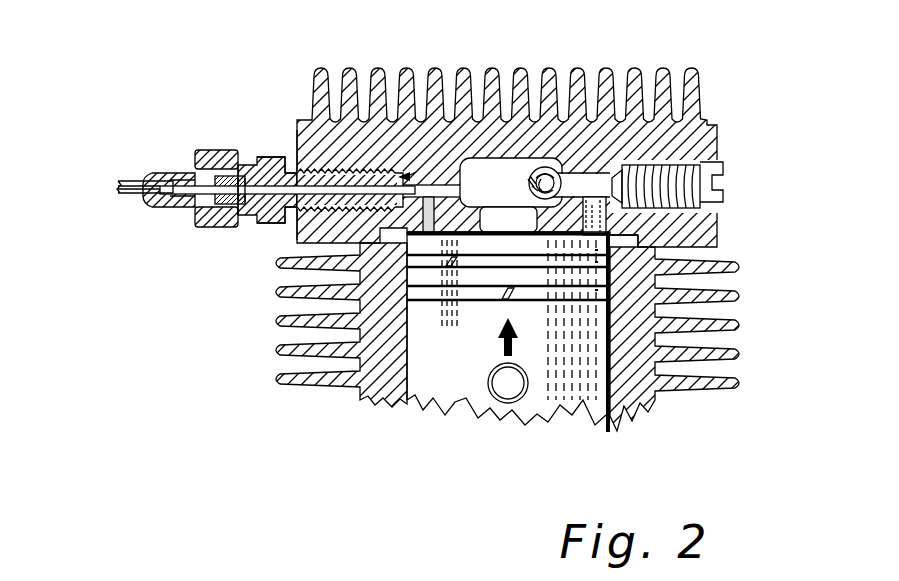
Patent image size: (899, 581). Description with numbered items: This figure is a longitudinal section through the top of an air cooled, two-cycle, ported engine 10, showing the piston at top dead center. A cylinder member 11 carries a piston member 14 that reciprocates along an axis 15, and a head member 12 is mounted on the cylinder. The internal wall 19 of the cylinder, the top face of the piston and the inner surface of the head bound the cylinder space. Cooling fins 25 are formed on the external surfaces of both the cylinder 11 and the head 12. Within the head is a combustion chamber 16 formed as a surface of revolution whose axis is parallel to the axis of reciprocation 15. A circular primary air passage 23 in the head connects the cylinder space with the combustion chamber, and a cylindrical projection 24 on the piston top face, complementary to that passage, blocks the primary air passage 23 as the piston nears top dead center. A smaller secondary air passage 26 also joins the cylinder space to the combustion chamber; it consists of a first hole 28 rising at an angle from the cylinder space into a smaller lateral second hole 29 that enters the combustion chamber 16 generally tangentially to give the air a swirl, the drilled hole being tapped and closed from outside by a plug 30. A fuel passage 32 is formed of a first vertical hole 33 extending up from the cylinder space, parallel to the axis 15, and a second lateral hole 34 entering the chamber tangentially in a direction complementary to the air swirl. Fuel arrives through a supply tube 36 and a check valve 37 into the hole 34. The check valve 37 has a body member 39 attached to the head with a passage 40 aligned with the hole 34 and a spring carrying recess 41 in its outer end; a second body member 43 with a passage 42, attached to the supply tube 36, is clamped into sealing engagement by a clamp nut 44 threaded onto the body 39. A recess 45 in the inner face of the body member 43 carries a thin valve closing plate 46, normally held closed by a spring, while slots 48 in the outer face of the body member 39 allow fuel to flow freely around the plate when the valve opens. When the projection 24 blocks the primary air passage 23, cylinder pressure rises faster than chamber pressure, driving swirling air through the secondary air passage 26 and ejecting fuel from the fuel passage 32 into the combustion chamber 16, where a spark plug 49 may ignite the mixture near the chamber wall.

The engine 10 is at (722, 118).
The cylinder member 11 is at (360, 398).
The head member 12 is at (697, 225).
The piston member 14 is at (408, 403).
The axis 15 is at (500, 338).
The combustion chamber 16 is at (500, 157).
The internal wall 19 is at (585, 405).
The primary air passage 23 is at (497, 168).
The cylindrical projection 24 is at (490, 218).
The cooling fins 25 is at (690, 76).
The secondary air passage 26 is at (593, 148).
The first hole 28 is at (598, 205).
The lateral second hole 29 is at (562, 176).
The plug 30 is at (720, 176).
The fuel passage 32 is at (441, 148).
The first vertical hole 33 is at (431, 218).
The second lateral hole 34 is at (432, 195).
The supply tube 36 is at (128, 183).
The check valve 37 is at (204, 146).
The body member 39 is at (270, 158).
The passage 40 is at (288, 164).
The spring carrying recess 41 is at (238, 228).
The passage 42 is at (188, 186).
The second body member 43 is at (170, 203).
The clamp nut 44 is at (217, 152).
The recess 45 is at (246, 170).
The valve closing plate 46 is at (216, 185).
The slots 48 is at (203, 228).
The spark plug 49 is at (536, 168).